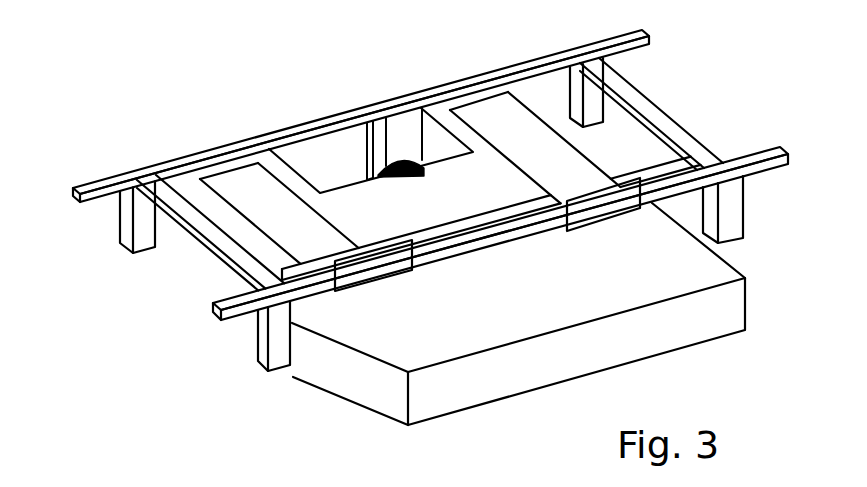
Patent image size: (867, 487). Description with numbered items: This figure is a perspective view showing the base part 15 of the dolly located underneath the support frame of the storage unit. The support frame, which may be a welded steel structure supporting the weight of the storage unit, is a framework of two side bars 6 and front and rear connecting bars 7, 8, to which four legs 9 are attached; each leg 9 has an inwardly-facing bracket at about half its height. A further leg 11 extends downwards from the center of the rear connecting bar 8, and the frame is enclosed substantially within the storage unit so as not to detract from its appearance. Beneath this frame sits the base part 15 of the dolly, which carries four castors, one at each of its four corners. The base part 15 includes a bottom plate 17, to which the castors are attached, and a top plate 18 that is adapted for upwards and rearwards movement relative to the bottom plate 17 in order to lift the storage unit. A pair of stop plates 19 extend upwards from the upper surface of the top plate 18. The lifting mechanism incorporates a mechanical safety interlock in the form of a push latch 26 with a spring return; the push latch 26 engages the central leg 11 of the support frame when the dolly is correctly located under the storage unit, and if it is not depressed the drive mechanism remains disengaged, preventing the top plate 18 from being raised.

The side bar 6 is at (642, 88).
The front connecting bar 7 is at (480, 243).
The rear connecting bar 8 is at (142, 177).
The leg 9 is at (140, 230).
The further leg 11 is at (370, 150).
The base part 15 is at (375, 362).
The bottom plate 17 is at (733, 337).
The top plate 18 is at (607, 150).
The stop plate 19 is at (380, 270).
The push latch 26 is at (398, 162).